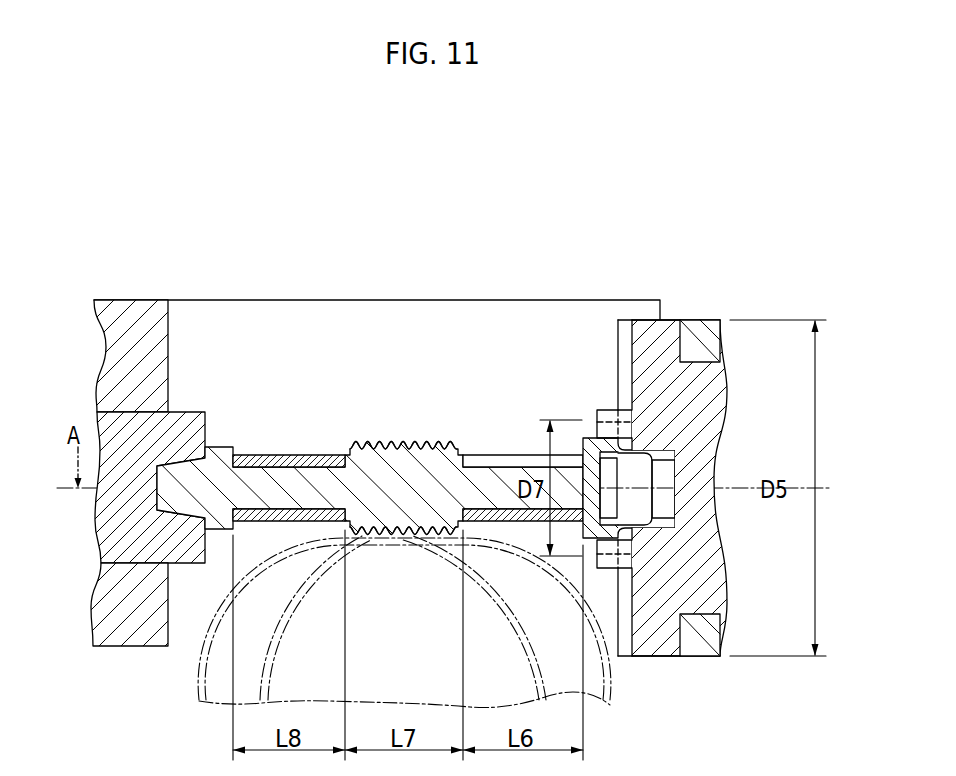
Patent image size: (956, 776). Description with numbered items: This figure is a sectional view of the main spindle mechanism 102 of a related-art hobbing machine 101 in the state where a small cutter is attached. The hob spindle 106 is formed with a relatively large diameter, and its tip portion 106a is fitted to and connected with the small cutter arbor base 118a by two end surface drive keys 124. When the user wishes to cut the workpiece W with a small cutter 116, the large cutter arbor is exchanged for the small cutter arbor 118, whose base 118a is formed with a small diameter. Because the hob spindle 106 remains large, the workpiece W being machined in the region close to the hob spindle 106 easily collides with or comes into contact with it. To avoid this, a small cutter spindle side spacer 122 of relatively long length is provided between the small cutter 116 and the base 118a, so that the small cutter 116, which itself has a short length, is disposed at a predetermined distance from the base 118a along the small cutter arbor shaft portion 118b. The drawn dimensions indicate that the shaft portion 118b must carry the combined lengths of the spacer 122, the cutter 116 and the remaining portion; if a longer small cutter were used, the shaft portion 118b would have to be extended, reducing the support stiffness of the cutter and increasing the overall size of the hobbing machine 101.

The hobbing machine 101 is at (200, 296).
The main spindle mechanism 102 is at (395, 488).
The hob spindle 106 is at (708, 394).
The tip portion of the hob spindle 106a is at (646, 336).
The small cutter 116 is at (390, 440).
The small cutter arbor 118 is at (430, 465).
The small cutter arbor base 118a is at (596, 450).
The small cutter arbor shaft portion 118b is at (316, 467).
The small cutter spindle side spacer 122 is at (503, 458).
The end surface drive keys 124 is at (608, 412).
The workpiece W is at (199, 684).